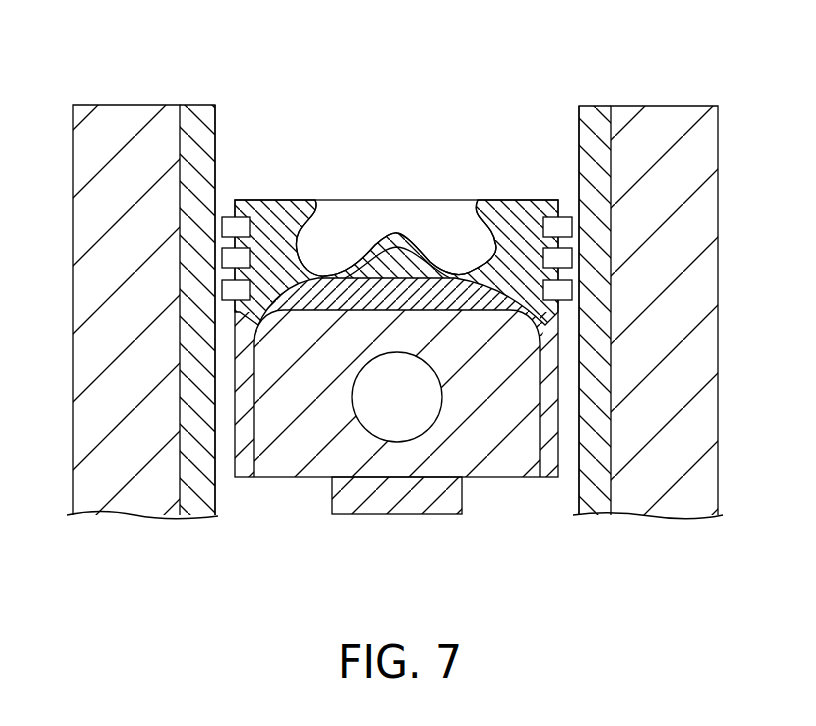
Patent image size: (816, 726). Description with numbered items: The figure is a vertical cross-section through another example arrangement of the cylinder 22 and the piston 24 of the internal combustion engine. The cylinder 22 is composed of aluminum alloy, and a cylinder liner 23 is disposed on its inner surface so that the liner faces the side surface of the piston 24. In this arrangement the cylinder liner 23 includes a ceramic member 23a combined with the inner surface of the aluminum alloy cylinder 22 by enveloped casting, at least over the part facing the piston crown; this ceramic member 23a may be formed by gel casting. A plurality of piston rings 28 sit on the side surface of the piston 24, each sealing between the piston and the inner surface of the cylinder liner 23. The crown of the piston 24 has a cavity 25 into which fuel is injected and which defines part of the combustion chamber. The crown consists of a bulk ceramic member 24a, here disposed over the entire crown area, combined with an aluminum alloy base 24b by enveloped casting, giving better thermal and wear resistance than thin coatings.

The cylinder 22 is at (123, 482).
The cylinder liner 23 is at (198, 498).
The ceramic member 23a is at (200, 112).
The piston 24 is at (305, 478).
The ceramic member 24a is at (507, 210).
The aluminum alloy base 24b is at (240, 432).
The cavity 25 is at (358, 242).
The piston rings 28 is at (244, 292).